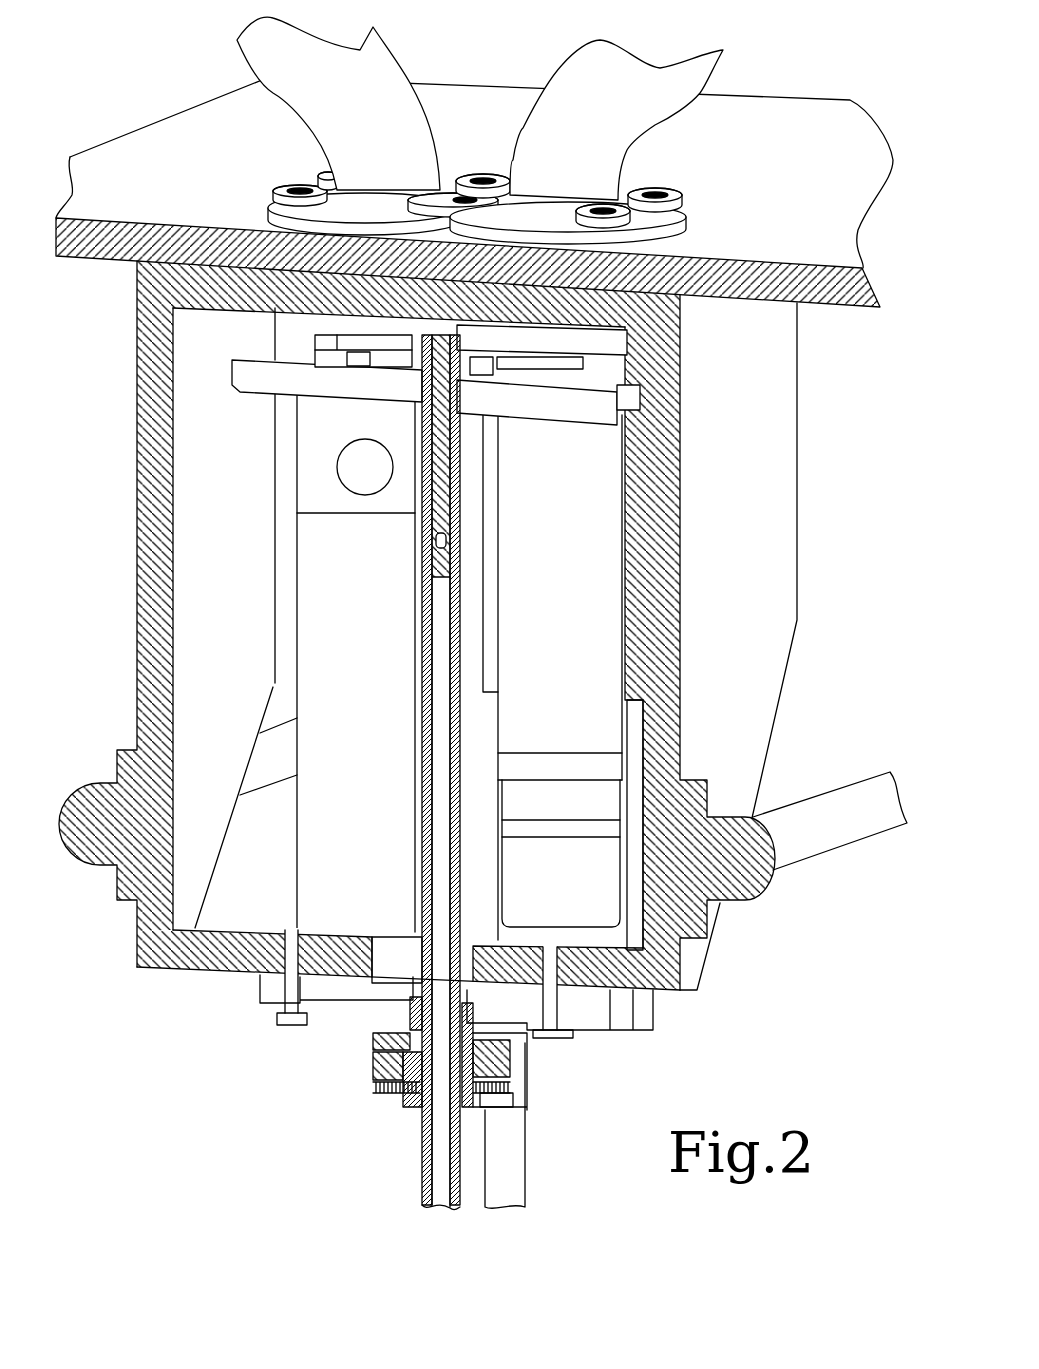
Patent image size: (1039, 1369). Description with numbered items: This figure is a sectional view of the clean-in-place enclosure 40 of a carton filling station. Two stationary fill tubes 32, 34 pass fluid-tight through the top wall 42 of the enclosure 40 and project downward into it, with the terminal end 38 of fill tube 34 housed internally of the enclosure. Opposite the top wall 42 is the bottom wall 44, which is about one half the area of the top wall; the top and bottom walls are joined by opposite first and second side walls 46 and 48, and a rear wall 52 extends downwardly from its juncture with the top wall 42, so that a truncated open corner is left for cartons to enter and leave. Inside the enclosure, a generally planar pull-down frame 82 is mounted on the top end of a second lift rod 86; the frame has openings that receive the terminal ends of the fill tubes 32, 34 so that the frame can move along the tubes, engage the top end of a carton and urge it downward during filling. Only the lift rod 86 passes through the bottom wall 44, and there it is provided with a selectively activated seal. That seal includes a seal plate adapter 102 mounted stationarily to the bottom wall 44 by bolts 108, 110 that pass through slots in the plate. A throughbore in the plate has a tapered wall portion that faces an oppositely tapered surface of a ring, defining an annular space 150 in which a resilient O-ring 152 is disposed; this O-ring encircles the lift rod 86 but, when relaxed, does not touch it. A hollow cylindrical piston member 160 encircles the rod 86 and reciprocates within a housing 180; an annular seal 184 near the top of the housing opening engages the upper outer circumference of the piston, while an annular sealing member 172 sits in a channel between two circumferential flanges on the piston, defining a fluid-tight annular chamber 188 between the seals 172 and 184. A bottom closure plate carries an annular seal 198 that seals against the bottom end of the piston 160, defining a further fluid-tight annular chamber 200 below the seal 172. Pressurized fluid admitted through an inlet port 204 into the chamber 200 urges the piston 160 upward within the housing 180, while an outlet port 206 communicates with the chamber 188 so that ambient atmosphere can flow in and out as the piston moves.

The fill tube 32 is at (268, 52).
The fill tube 34 is at (578, 66).
The terminal end 38 is at (655, 985).
The enclosure 40 is at (117, 362).
The top wall 42 is at (112, 262).
The bottom wall 44 is at (187, 968).
The first side wall 46 is at (137, 556).
The second side wall 48 is at (665, 655).
The rear wall 52 is at (287, 676).
The pull-down frame 82 is at (265, 382).
The second lift rod 86 is at (422, 1172).
The seal plate adapter 102 is at (365, 998).
The bolt 108 is at (290, 1030).
The bolt 110 is at (558, 1050).
The annular space 150 is at (410, 983).
The O-ring 152 is at (400, 1008).
The piston member 160 is at (515, 1068).
The annular sealing member 172 is at (403, 1092).
The housing 180 is at (548, 1040).
The annular seal 184 is at (402, 1090).
The annular chamber 188 is at (418, 1003).
The annular seal 198 is at (433, 1200).
The further annular chamber 200 is at (490, 1110).
The inlet port 204 is at (510, 1092).
The outlet port 206 is at (373, 1055).